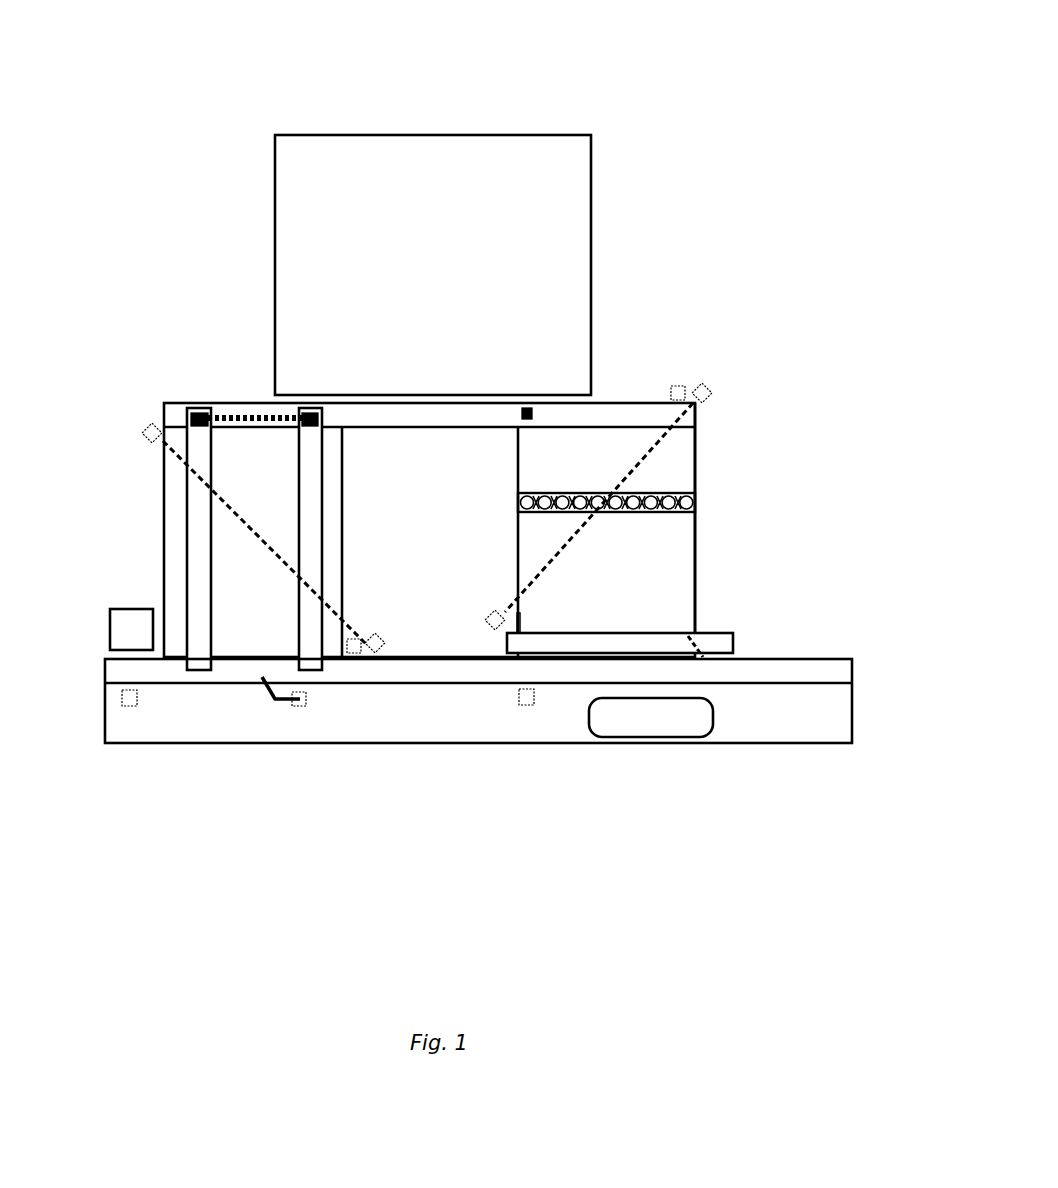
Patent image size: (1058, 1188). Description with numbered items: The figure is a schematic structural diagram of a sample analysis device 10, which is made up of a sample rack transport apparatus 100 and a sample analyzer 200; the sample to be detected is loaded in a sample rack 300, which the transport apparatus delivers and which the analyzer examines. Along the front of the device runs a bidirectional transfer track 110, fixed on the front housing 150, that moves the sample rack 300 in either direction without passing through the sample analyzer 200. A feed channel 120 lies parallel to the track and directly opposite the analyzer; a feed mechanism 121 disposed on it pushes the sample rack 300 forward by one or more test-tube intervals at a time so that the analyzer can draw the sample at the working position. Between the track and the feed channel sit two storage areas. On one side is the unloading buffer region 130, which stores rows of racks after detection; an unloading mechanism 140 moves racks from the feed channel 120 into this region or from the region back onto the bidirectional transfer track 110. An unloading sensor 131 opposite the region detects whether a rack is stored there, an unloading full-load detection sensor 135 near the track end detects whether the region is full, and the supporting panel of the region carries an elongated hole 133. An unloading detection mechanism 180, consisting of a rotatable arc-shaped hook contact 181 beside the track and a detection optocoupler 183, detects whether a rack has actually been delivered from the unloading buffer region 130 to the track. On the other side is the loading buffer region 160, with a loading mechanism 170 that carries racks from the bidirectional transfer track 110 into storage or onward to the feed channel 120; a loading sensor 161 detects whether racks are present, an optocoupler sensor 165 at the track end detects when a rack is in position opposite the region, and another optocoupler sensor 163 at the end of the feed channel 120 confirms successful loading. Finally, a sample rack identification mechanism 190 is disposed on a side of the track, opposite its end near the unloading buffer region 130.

The sample analysis device 10 is at (260, 37).
The sample rack transport apparatus 100 is at (728, 523).
The bidirectional transfer track 110 is at (336, 672).
The feed channel 120 is at (447, 416).
The feed mechanism 121 is at (532, 407).
The unloading buffer region 130 is at (181, 536).
The unloading sensor 131 is at (147, 424).
The elongated hole 133 is at (192, 569).
The unloading full-load detection sensor 135 is at (380, 652).
The unloading mechanism 140 is at (240, 420).
The front housing 150 is at (740, 712).
The loading buffer region 160 is at (660, 558).
The loading sensor 161 is at (705, 395).
The optocoupler sensor 163 is at (679, 388).
The optocoupler sensor 165 is at (530, 698).
The loading mechanism 170 is at (718, 635).
The unloading detection mechanism 180 is at (247, 810).
The contact 181 is at (266, 700).
The detection optocoupler 183 is at (296, 706).
The sample rack identification mechanism 190 is at (133, 626).
The sample analyzer 200 is at (463, 218).
The sample rack 300 is at (695, 478).